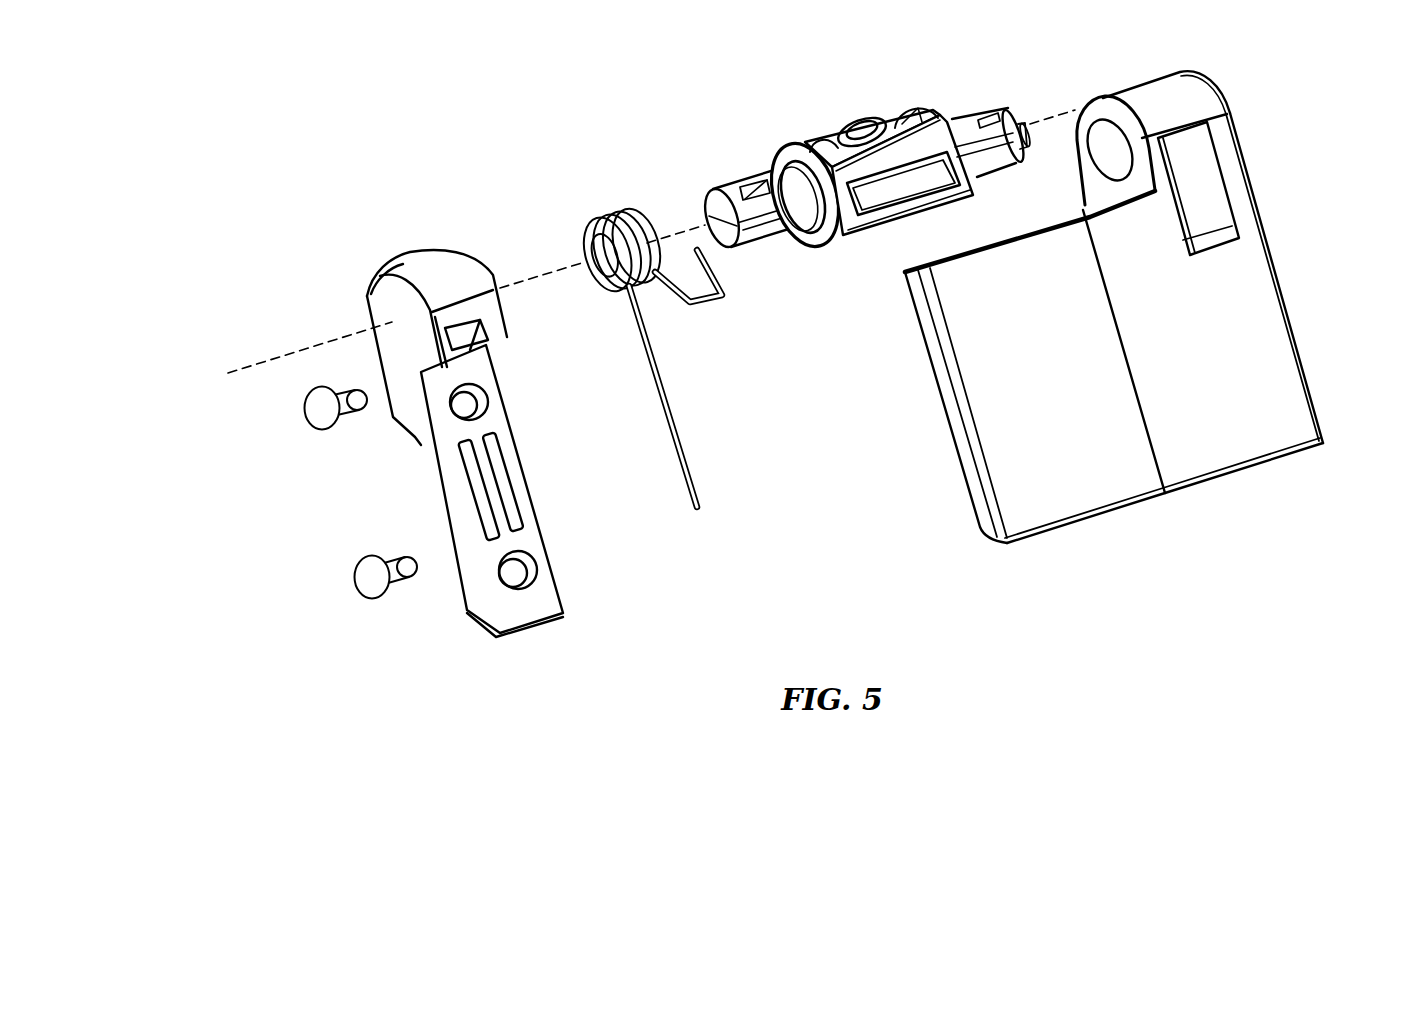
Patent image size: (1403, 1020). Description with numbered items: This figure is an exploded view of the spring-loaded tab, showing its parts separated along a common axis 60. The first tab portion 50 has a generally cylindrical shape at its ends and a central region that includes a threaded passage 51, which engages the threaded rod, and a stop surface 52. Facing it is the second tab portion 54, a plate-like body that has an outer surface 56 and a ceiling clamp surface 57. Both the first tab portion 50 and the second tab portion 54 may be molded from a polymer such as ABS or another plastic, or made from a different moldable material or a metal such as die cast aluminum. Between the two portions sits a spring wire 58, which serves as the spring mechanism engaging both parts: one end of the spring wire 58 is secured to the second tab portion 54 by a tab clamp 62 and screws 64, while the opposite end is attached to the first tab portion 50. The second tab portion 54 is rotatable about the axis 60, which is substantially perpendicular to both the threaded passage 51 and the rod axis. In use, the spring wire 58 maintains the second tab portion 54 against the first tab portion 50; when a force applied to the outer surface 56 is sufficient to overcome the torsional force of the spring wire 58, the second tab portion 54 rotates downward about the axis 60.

The first tab portion 50 is at (865, 154).
The threaded passage 51 is at (862, 112).
The stop surface 52 is at (908, 228).
The second tab portion 54 is at (1123, 333).
The outer surface 56 is at (1293, 415).
The ceiling clamp surface 57 is at (1022, 548).
The spring wire 58 is at (660, 382).
The axis 60 is at (525, 283).
The tab clamp 62 is at (553, 567).
The screws 64 is at (306, 413).